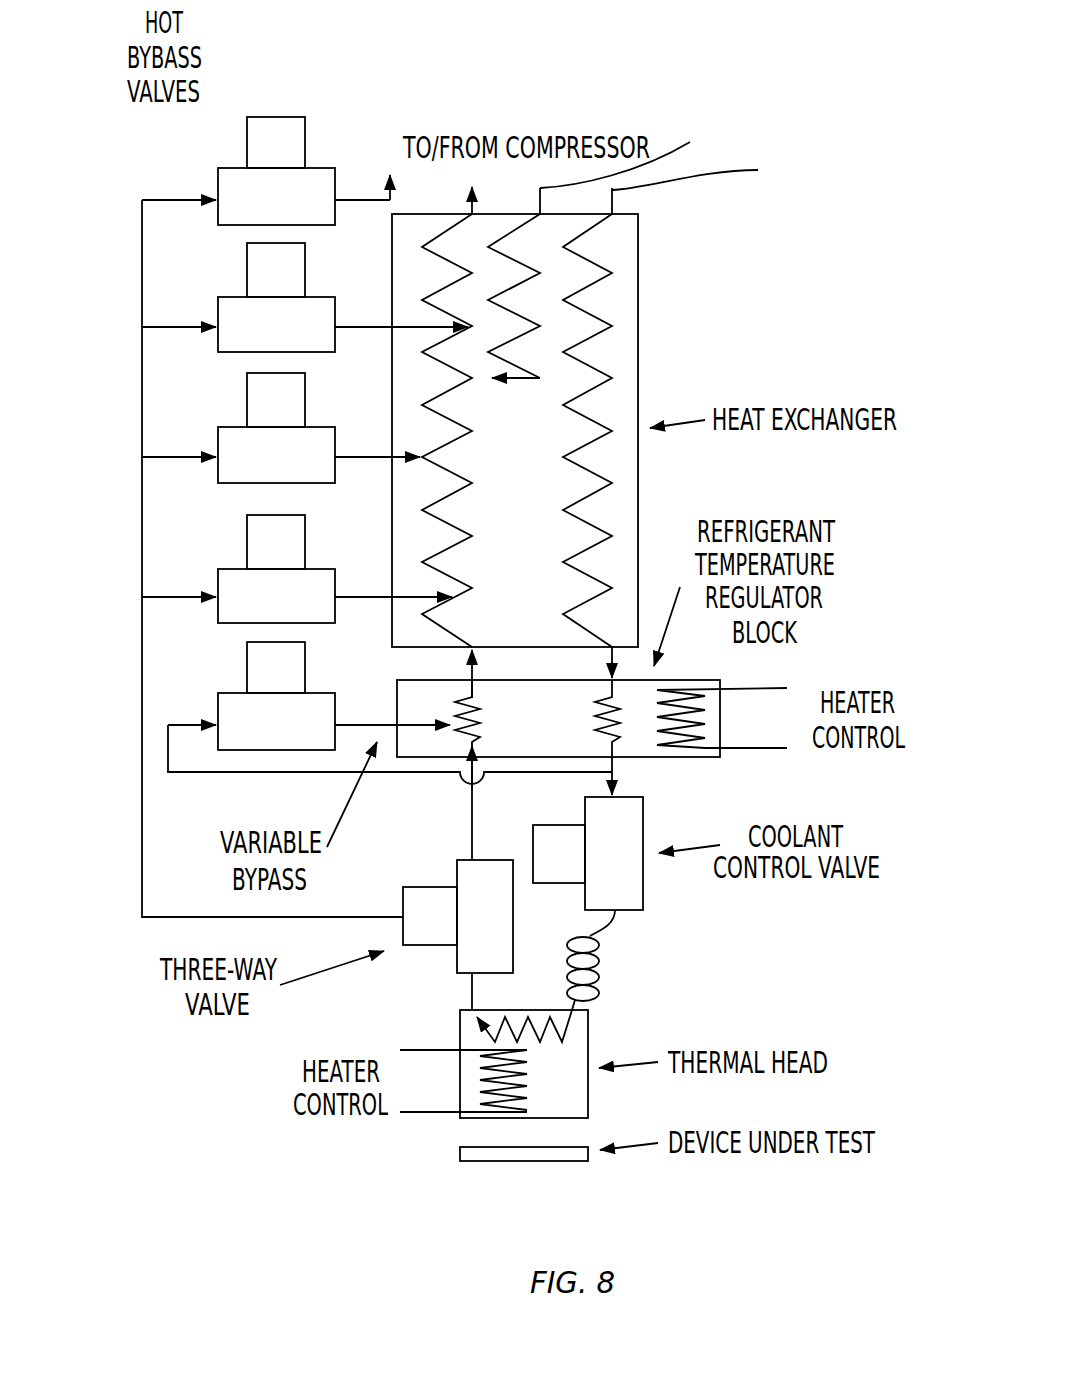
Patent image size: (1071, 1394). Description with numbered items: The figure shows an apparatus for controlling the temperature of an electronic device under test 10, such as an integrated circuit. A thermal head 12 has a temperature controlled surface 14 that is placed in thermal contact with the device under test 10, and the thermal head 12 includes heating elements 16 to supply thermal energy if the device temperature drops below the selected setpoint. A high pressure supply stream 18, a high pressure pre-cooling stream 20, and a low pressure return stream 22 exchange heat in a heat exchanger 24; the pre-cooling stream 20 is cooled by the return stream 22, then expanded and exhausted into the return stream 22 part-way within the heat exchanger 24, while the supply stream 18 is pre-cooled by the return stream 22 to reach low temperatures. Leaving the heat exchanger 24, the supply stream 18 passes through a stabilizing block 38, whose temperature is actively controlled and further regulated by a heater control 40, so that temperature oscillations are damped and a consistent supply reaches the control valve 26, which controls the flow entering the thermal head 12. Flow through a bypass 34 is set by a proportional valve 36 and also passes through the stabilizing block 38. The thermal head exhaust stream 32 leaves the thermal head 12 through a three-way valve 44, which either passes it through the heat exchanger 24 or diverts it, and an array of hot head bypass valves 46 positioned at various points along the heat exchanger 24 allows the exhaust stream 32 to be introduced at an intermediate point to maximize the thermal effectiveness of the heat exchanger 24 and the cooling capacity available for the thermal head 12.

The electronic device under test 10 is at (460, 1155).
The thermal head 12 is at (590, 1037).
The temperature controlled surface 14 is at (507, 1118).
The heating elements 16 is at (455, 1078).
The high pressure supply stream 18 is at (700, 174).
The high pressure pre-cooling stream 20 is at (690, 142).
The low pressure return stream 22 is at (475, 650).
The heat exchanger 24 is at (638, 345).
The control valve 26 is at (643, 820).
The thermal head exhaust stream 32 is at (472, 993).
The bypass 34 is at (372, 722).
The proportional valve 36 is at (247, 672).
The stabilizing block 38 is at (670, 758).
The heater control 40 is at (720, 722).
The three-way valve 44 is at (433, 887).
The hot head bypass valves 46 is at (168, 115).